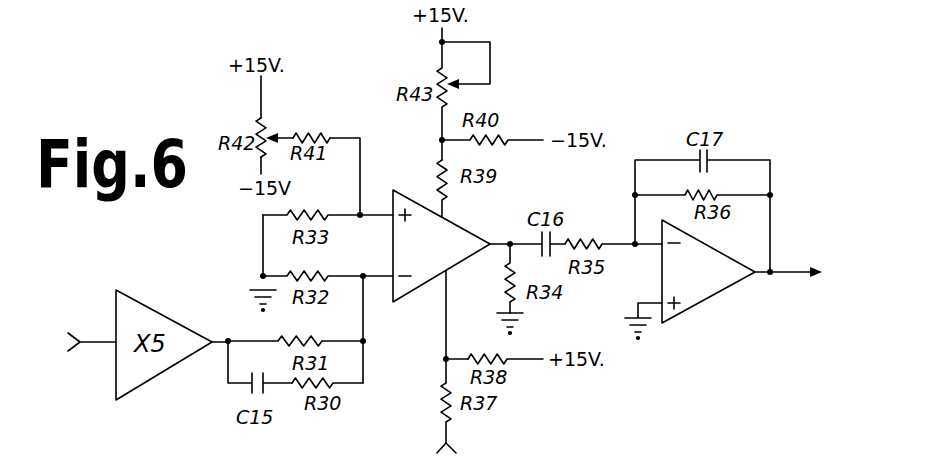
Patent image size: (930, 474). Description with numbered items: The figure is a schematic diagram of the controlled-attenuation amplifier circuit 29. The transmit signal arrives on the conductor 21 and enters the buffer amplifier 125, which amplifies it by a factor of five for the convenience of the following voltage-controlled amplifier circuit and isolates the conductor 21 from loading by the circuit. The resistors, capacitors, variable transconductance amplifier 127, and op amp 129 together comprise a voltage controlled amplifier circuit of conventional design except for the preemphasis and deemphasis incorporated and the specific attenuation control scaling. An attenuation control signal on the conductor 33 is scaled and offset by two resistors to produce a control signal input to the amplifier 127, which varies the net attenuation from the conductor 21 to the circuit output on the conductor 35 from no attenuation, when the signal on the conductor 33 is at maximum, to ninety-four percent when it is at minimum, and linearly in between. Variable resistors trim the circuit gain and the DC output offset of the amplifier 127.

The conductor 21 is at (91, 341).
The controlled-attenuation amplifier circuit 29 is at (221, 168).
The conductor 33 is at (452, 437).
The conductor 35 is at (800, 272).
The buffer amplifier 125 is at (162, 373).
The variable transconductance amplifier 127 is at (453, 225).
The op amp 129 is at (710, 297).